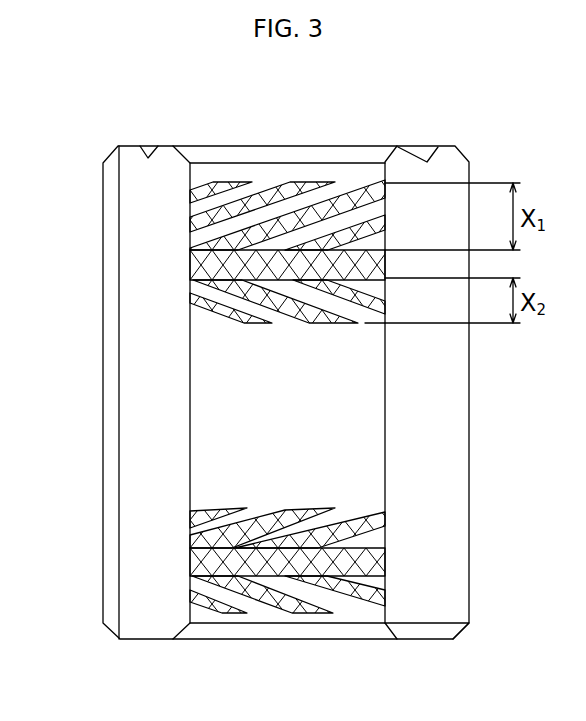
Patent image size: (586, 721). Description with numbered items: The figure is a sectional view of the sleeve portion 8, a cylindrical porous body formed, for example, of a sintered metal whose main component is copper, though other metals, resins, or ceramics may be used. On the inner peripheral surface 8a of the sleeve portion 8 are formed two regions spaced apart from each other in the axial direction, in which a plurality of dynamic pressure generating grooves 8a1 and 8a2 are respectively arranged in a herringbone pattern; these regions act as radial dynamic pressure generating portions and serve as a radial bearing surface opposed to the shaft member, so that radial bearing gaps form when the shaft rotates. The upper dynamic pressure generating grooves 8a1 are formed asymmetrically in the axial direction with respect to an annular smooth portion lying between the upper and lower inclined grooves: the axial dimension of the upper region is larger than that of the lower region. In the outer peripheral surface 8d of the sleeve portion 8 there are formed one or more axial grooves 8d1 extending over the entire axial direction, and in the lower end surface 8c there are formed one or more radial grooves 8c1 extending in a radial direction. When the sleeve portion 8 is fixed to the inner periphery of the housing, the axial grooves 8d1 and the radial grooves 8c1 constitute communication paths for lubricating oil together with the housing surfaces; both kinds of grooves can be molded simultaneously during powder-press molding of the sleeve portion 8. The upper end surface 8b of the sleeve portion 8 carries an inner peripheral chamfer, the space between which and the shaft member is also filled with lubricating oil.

The sleeve portion 8 is at (81, 149).
The inner peripheral surface 8a is at (384, 422).
The dynamic pressure generating grooves 8a1 is at (241, 194).
The dynamic pressure generating grooves 8a2 is at (248, 518).
The upper end surface 8b is at (121, 148).
The lower end surface 8c is at (150, 640).
The radial grooves 8c1 is at (425, 640).
The outer peripheral surface 8d is at (103, 350).
The axial grooves 8d1 is at (119, 438).